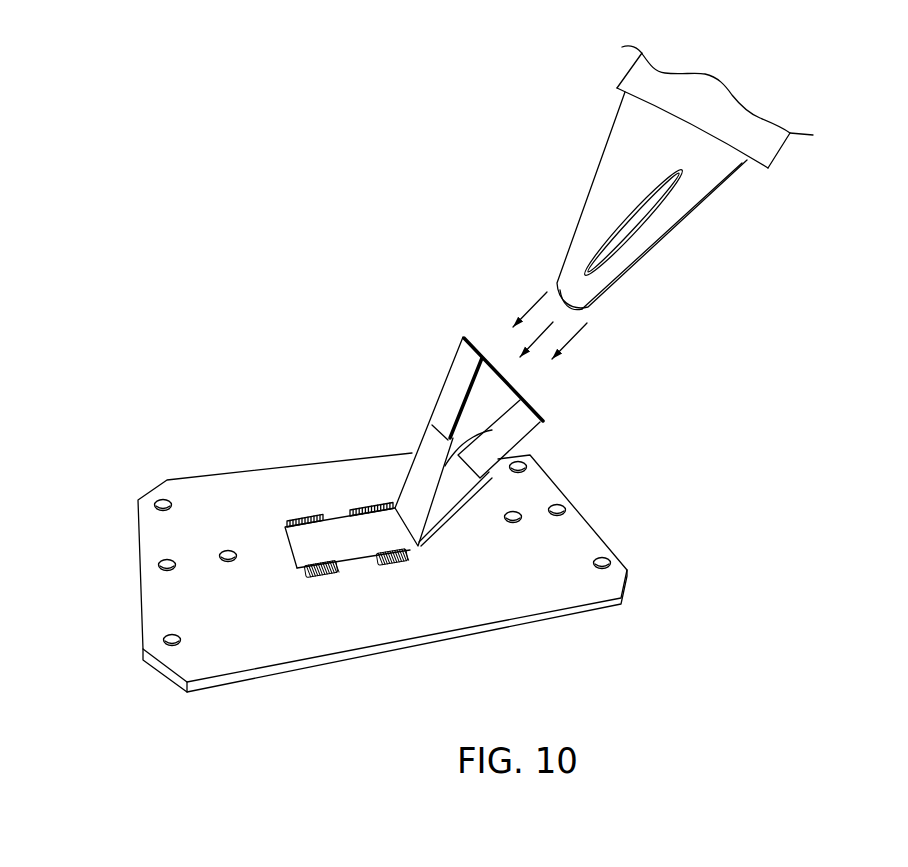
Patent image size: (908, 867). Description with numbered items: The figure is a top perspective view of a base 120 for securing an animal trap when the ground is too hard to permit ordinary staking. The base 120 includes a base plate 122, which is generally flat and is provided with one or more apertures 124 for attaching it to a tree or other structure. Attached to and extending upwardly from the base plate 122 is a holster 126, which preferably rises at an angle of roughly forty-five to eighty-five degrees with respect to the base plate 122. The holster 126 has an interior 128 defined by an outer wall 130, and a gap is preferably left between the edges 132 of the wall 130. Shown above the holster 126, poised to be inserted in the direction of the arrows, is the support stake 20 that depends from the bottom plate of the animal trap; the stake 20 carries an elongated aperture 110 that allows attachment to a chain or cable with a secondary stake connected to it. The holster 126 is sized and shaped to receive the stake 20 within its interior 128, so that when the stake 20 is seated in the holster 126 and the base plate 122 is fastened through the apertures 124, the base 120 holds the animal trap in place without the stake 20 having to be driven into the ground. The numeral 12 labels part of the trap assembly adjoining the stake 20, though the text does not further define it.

The sample tube 12 is at (655, 85).
The support stake 20 is at (697, 201).
The elongated aperture 110 is at (633, 223).
The base 120 is at (613, 491).
The base plate 122 is at (507, 593).
The apertures 124 is at (606, 565).
The holster 126 is at (484, 523).
The interior 128 is at (493, 400).
The outer wall 130 is at (487, 462).
The edges 132 is at (375, 675).